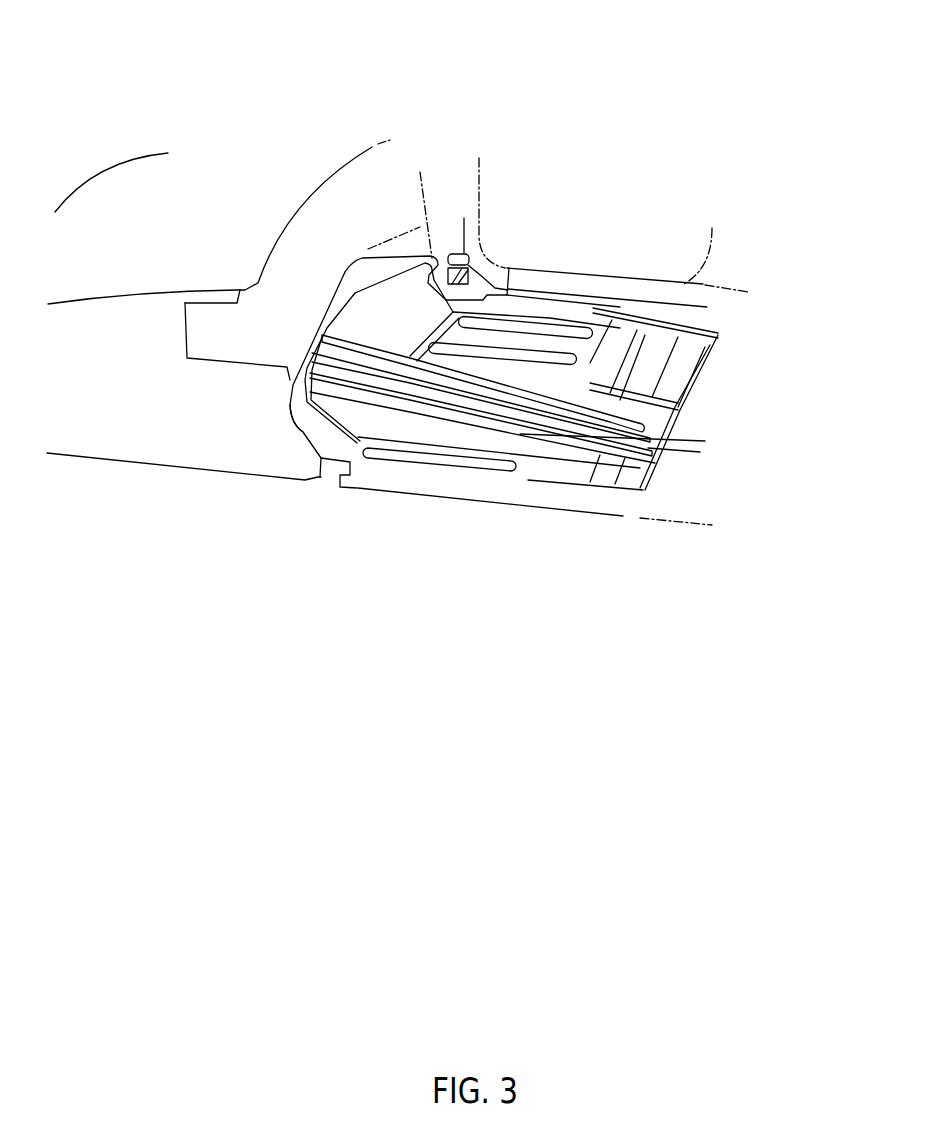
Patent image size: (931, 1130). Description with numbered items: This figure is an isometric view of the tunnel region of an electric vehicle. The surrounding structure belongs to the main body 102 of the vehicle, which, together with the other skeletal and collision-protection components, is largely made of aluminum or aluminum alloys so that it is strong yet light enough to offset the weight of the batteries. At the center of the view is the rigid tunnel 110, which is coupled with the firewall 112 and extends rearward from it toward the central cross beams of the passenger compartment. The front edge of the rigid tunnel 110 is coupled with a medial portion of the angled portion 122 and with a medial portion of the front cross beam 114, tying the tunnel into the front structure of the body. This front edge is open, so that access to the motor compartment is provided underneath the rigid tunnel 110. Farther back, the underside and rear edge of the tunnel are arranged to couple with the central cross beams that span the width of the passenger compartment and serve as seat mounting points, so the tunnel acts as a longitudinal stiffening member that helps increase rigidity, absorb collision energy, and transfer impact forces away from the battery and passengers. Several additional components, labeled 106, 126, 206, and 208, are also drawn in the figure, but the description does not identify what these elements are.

The main body 102 is at (379, 375).
The slotted plate 106 is at (550, 318).
The rigid tunnel 110 is at (358, 423).
The firewall 112 is at (326, 246).
The front cross beam 114 is at (368, 273).
The angled portion 122 is at (305, 432).
The panel 126 is at (655, 282).
The connector 206 is at (614, 345).
The rail 208 is at (688, 361).